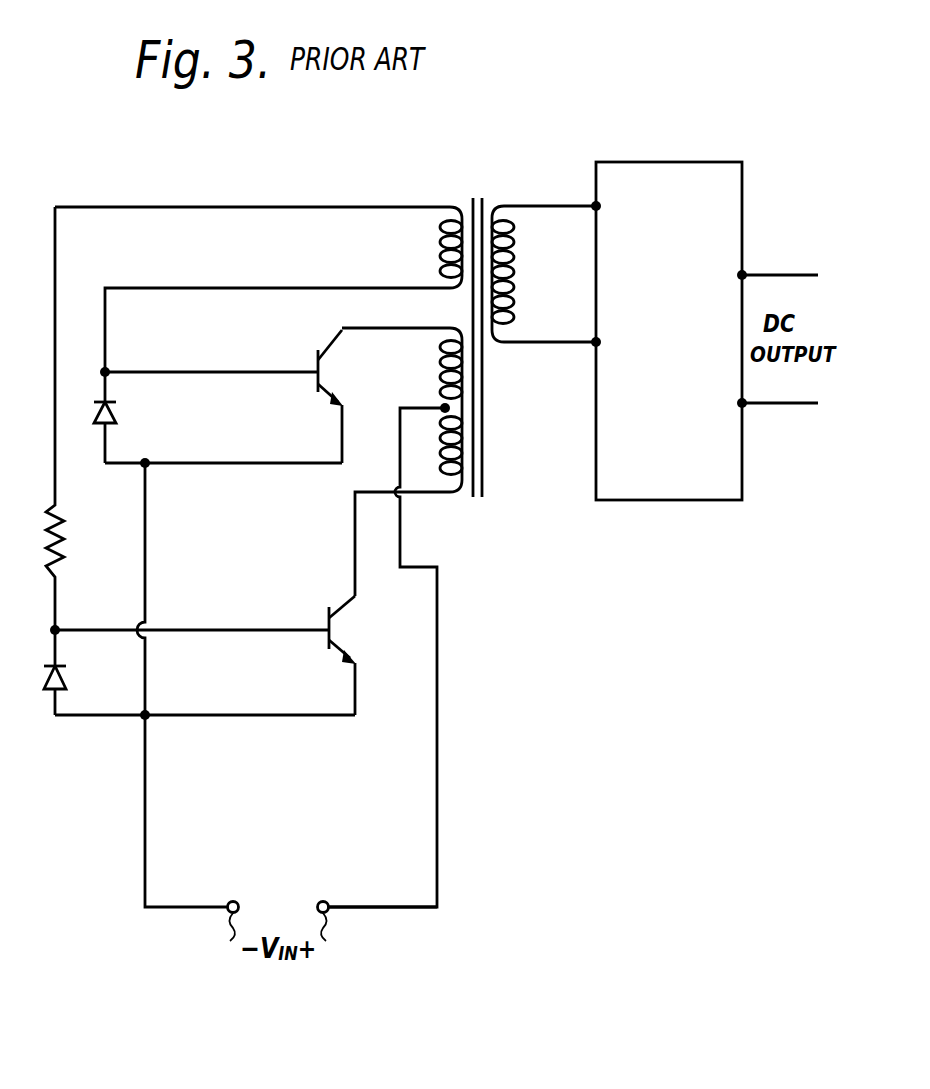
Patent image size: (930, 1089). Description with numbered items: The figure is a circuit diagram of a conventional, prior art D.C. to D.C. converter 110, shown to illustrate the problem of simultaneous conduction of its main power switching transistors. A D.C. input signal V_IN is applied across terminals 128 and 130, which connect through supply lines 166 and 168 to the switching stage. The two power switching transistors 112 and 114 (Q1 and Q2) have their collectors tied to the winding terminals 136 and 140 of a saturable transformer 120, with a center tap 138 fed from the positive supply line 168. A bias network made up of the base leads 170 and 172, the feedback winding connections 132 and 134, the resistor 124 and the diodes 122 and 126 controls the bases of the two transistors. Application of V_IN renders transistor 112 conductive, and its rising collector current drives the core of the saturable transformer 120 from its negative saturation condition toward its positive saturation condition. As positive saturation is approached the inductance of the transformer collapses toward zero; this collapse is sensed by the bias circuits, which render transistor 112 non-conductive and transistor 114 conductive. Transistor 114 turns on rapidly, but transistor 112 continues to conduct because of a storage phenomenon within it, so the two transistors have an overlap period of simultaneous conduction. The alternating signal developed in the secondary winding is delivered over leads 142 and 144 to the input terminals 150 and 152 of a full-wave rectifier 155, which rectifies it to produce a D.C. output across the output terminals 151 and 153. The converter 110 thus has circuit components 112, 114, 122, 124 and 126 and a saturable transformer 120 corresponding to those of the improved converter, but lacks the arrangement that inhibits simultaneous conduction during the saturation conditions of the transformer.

The D.C. to D.C. converter 110 is at (643, 134).
The power switching transistor 112 is at (358, 396).
The power switching transistor 114 is at (371, 655).
The saturable transformer 120 is at (493, 184).
The circuit component 122 is at (118, 414).
The circuit component 124 is at (62, 557).
The circuit component 126 is at (68, 677).
The terminal 128 is at (323, 901).
The terminal 130 is at (233, 901).
The primary winding end 132 is at (447, 204).
The primary winding lead 134 is at (433, 270).
The primary winding 136 is at (446, 327).
The primary winding tap 138 is at (441, 404).
The primary winding end 140 is at (429, 496).
The secondary winding lead 142 is at (569, 204).
The secondary winding lead 144 is at (572, 342).
The rectifier input terminal 150 is at (620, 209).
The rectifier output terminal 151 is at (759, 277).
The rectifier input terminal 152 is at (620, 347).
The rectifier output terminal 153 is at (759, 405).
The full-wave rectifier 155 is at (678, 268).
The negative supply line 166 is at (147, 826).
The positive supply line 168 is at (403, 907).
The base lead of Q1 170 is at (231, 370).
The base lead of Q2 172 is at (229, 629).